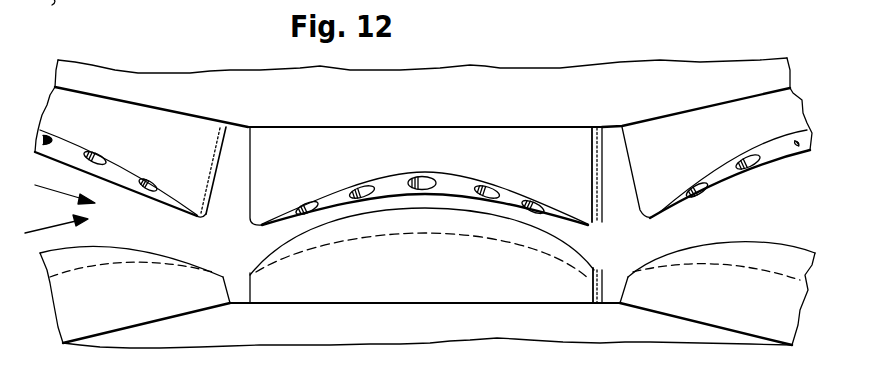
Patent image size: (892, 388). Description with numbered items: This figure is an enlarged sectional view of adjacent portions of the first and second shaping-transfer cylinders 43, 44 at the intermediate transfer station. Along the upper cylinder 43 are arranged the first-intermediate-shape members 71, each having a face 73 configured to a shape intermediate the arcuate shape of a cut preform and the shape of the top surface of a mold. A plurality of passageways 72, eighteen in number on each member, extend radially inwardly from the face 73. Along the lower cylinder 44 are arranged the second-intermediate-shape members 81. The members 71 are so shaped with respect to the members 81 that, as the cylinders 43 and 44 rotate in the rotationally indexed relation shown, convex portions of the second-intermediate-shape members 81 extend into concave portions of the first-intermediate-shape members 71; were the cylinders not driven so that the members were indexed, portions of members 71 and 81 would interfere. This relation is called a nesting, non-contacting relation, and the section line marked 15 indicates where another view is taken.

The section line 15- 15 is at (402, 148).
The cylinder 43 is at (475, 77).
The cylinder 44 is at (457, 335).
The first-intermediate-shape member 71 is at (188, 184).
The passageway 72 is at (107, 160).
The face 73 is at (70, 147).
The second-intermediate-shape member 81 is at (176, 298).